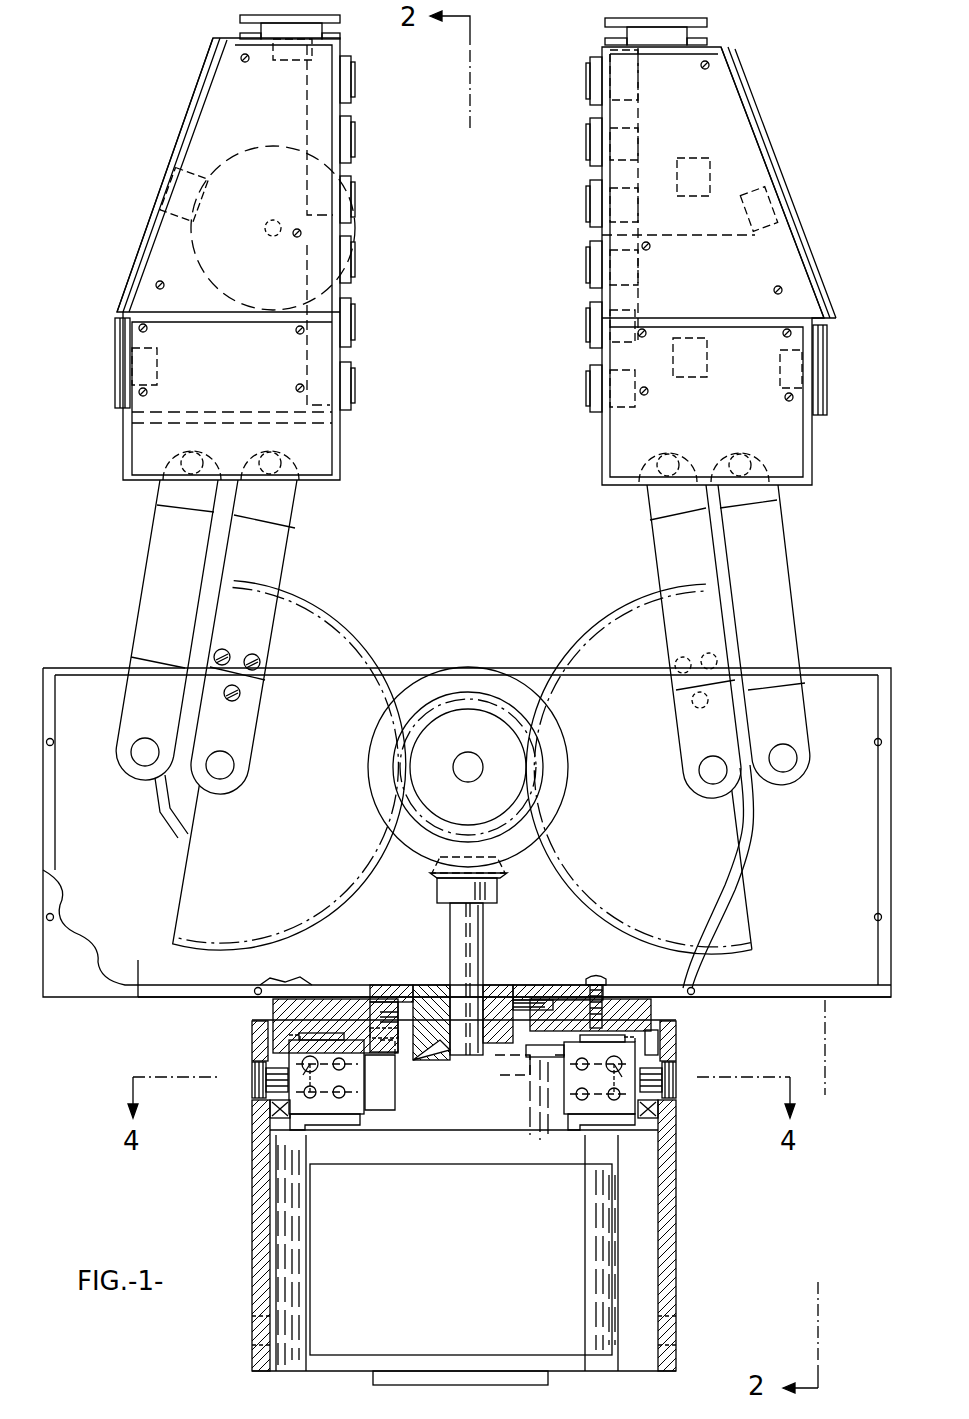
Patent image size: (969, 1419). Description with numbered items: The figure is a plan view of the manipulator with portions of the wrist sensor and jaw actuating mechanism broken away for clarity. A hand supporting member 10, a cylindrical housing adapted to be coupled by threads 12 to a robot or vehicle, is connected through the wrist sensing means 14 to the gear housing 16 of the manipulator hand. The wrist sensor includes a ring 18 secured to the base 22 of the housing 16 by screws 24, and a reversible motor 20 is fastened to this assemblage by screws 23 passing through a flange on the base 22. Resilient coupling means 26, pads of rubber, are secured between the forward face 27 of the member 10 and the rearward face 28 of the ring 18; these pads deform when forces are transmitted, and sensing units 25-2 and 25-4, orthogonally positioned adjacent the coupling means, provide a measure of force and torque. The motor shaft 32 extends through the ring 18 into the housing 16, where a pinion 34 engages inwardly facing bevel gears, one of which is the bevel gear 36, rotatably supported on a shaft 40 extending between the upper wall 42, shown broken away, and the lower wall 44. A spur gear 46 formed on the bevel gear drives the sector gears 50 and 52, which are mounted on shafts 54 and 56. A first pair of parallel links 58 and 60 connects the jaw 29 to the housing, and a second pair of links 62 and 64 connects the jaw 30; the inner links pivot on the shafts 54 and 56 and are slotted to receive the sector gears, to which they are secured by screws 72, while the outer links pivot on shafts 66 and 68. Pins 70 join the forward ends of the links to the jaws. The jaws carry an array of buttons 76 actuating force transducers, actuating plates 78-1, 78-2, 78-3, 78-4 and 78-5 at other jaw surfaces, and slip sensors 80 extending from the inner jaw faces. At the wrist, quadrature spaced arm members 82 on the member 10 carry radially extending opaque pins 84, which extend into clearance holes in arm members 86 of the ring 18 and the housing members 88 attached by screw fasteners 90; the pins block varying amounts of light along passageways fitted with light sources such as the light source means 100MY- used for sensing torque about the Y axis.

The hand supporting member 10 is at (670, 1200).
The threads 12 is at (674, 1345).
The wrist sensing means 14 is at (190, 1150).
The gear box or housing 16 is at (138, 1000).
The ring 18 is at (652, 1013).
The reversible motor 20 is at (615, 1270).
The base 22 is at (880, 1000).
The screws 23 is at (537, 1005).
The screws 24 is at (602, 987).
The sensing unit 25-2 is at (612, 1070).
The sensing unit 25-4 is at (318, 1068).
The resilient coupling means 26 is at (378, 1105).
The forward face 27 is at (548, 1098).
The rearward face 28 is at (400, 1040).
The jaw 29 is at (123, 485).
The jaw 30 is at (815, 487).
The motor shaft 32 is at (480, 938).
The pinion 34 is at (495, 882).
The bevel gear 36 is at (436, 668).
The shaft 40 is at (474, 760).
The upper wall 42 is at (80, 998).
The lower wall 44 is at (98, 665).
The spur gear 46 is at (470, 693).
The sector gear 50 is at (305, 620).
The sector gear 52 is at (630, 620).
The shaft 54 is at (226, 770).
The shaft 56 is at (718, 772).
The link 58 is at (280, 560).
The link 60 is at (160, 579).
The link 62 is at (670, 555).
The link 64 is at (780, 550).
The shaft 66 is at (150, 758).
The shaft 68 is at (798, 758).
The pins 70 is at (270, 485).
The screws 72 is at (240, 693).
The buttons 76 is at (588, 132).
The actuating plate 78-1 is at (115, 376).
The actuating plate 78-2 is at (165, 235).
The actuating plate 78-3 is at (240, 18).
The actuating plate 78-4 is at (225, 108).
The actuating plate 78-5 is at (185, 352).
The slip sensors 80 is at (600, 235).
The arm members 82 is at (255, 1030).
The opaque pins 84 is at (262, 1082).
The arm members 86 is at (466, 1253).
The housing members 88 is at (384, 1000).
The screw fasteners 90 is at (305, 1110).
The light source means 100MY- is at (612, 1066).